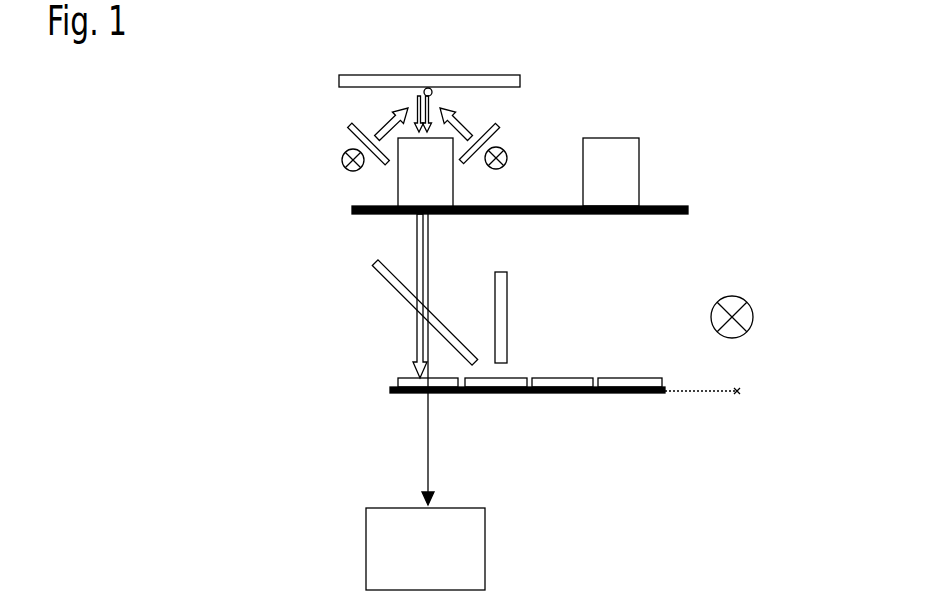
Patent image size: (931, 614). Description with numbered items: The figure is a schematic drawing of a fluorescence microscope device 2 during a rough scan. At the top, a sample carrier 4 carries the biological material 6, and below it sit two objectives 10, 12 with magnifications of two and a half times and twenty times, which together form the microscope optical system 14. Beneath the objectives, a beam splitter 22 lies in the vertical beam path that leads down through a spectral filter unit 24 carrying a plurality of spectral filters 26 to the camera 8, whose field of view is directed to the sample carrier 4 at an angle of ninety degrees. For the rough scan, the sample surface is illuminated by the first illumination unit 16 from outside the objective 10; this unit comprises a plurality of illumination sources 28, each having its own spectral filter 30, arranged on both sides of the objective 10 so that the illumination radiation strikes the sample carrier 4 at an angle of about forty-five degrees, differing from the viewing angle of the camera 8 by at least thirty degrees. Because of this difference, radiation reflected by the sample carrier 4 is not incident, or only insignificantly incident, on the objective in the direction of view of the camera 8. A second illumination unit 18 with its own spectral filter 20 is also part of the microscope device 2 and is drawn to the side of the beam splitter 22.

The microscope device 2 is at (300, 292).
The sample carrier 4 is at (489, 80).
The biological material 6 is at (428, 88).
The camera 8 is at (475, 538).
The objective 10 is at (403, 192).
The objective 12 is at (630, 148).
The microscope optical system 14 is at (670, 172).
The first illumination unit 16 is at (337, 134).
The second illumination unit 18 is at (745, 286).
The spectral filter 20 is at (503, 280).
The beam splitter 22 is at (393, 288).
The spectral filter unit 24 is at (750, 382).
The spectral filters 26 is at (626, 390).
The illumination sources 28 is at (341, 160).
The spectral filter 30 is at (497, 128).